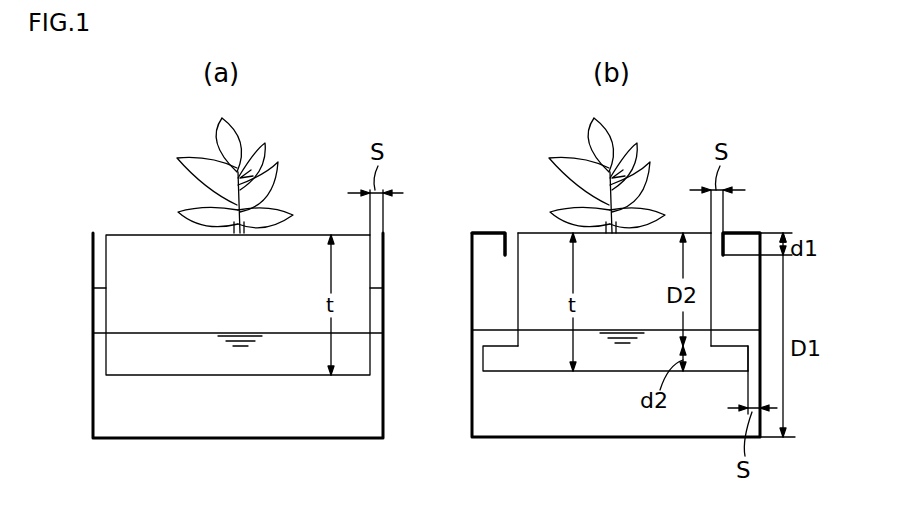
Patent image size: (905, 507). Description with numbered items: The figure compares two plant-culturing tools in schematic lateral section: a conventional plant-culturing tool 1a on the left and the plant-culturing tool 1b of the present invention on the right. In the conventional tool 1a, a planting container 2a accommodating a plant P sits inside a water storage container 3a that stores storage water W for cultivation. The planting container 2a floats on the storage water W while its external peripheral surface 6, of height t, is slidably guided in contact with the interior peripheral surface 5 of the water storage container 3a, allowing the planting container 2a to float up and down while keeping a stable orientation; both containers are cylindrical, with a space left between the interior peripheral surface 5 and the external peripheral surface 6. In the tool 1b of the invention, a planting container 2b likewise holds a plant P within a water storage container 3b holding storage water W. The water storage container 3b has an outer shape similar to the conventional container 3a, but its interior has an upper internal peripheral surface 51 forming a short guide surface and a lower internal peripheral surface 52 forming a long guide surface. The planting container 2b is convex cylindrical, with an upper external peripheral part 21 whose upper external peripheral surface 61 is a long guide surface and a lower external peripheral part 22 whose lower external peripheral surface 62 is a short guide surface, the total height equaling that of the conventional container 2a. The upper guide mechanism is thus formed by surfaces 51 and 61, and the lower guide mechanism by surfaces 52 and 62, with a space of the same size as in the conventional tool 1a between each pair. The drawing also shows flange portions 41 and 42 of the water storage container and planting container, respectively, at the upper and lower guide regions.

The conventional plant-culturing tool 1a is at (106, 135).
The plant-culturing tool 1b is at (476, 174).
The planting container 2a is at (312, 225).
The planting container 2b is at (676, 224).
The water storage container 3a is at (265, 438).
The water storage container 3b is at (594, 437).
The interior peripheral surface 5 is at (93, 350).
The external peripheral surface 6 is at (93, 288).
The upper external peripheral part 21 is at (545, 243).
The lower external peripheral part 22 is at (500, 366).
The upper hook portion of outer pot 41 is at (735, 218).
The lower flange portion 42 is at (740, 380).
The upper internal peripheral surface 51 is at (508, 242).
The lower internal peripheral surface 52 is at (472, 300).
The upper external peripheral surface 61 is at (517, 298).
The lower external peripheral surface 62 is at (483, 358).
The plant P is at (212, 140).
The storage water W is at (195, 333).